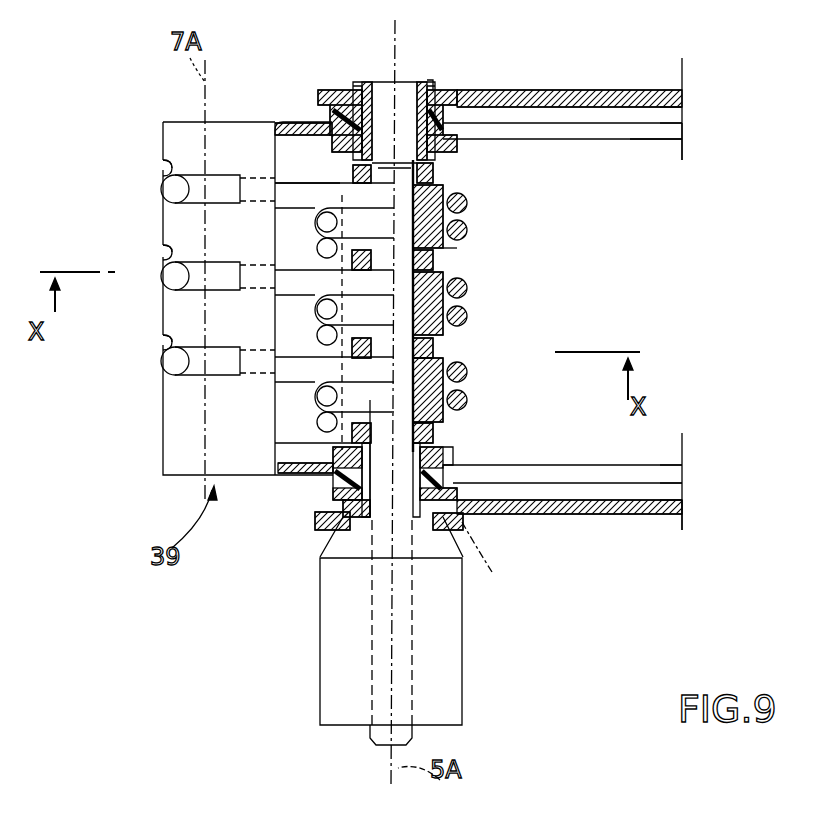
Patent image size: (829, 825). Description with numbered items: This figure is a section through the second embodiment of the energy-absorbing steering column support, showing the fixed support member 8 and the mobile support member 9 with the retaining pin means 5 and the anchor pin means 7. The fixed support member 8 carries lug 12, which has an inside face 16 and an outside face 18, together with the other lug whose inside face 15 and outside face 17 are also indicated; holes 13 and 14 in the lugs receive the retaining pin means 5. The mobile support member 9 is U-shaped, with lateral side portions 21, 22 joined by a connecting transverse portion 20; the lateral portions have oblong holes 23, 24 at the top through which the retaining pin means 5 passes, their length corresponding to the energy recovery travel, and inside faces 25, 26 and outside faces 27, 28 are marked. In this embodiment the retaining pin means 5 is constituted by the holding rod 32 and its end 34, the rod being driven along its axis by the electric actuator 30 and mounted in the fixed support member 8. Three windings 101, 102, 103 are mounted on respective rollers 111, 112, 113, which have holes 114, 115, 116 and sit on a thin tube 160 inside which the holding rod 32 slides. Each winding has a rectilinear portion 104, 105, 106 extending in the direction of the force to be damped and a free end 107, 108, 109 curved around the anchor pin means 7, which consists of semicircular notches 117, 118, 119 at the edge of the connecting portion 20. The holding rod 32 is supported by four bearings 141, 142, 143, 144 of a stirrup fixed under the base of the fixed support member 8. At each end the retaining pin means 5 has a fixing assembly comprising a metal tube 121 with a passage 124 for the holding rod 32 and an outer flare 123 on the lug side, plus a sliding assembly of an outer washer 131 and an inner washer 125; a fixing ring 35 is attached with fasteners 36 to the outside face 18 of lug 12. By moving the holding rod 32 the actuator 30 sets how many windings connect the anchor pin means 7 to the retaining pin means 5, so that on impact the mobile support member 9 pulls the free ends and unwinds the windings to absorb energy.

The retaining pin means 5 is at (368, 738).
The anchor pin means 7 is at (158, 432).
The fixed support member 8 is at (568, 92).
The mobile support member 9 is at (585, 141).
The lug 12 is at (600, 515).
The hole 13 is at (445, 92).
The hole 14 is at (350, 500).
The inside face 15 is at (675, 108).
The inside face 16 is at (670, 500).
The outside face 17 is at (638, 92).
The outside face 18 is at (675, 515).
The connecting transverse portion 20 is at (190, 130).
The lateral side portion 21 is at (305, 193).
The lateral side portion 22 is at (333, 480).
The oblong hole 23 is at (665, 135).
The oblong hole 24 is at (672, 465).
The inside face 25 is at (632, 141).
The inside face 26 is at (590, 465).
The outside face 27 is at (670, 122).
The lower arm intermediate edge 28 is at (670, 481).
The electric actuator 30 is at (340, 652).
The holding rod 32 is at (397, 510).
The end of holding rod 34 is at (465, 200).
The fixing ring 35 is at (462, 525).
The fasteners 36 is at (420, 554).
The winding 101 is at (440, 225).
The winding 102 is at (440, 310).
The winding 103 is at (440, 396).
The rectilinear portion 104 is at (278, 124).
The rectilinear portion 105 is at (303, 267).
The rectilinear portion 106 is at (303, 352).
The free end 107 is at (170, 190).
The free end 108 is at (170, 284).
The free end 109 is at (170, 366).
The roller 111 is at (450, 246).
The roller 112 is at (462, 320).
The roller 113 is at (462, 404).
The hole 114 is at (462, 228).
The hole 115 is at (462, 290).
The hole 116 is at (462, 374).
The semicircular notch 117 is at (163, 164).
The semicircular notch 118 is at (163, 250).
The semicircular notch 119 is at (163, 340).
The metal tube 121 is at (428, 88).
The outer flare 123 is at (380, 88).
The passage 124 is at (402, 82).
The inner washer 125 is at (450, 150).
The outer washer 131 is at (345, 90).
The bearing 141 is at (436, 170).
The bearing 142 is at (436, 262).
The bearing 143 is at (436, 350).
The bearing 144 is at (436, 436).
The thin tube 160 is at (360, 392).